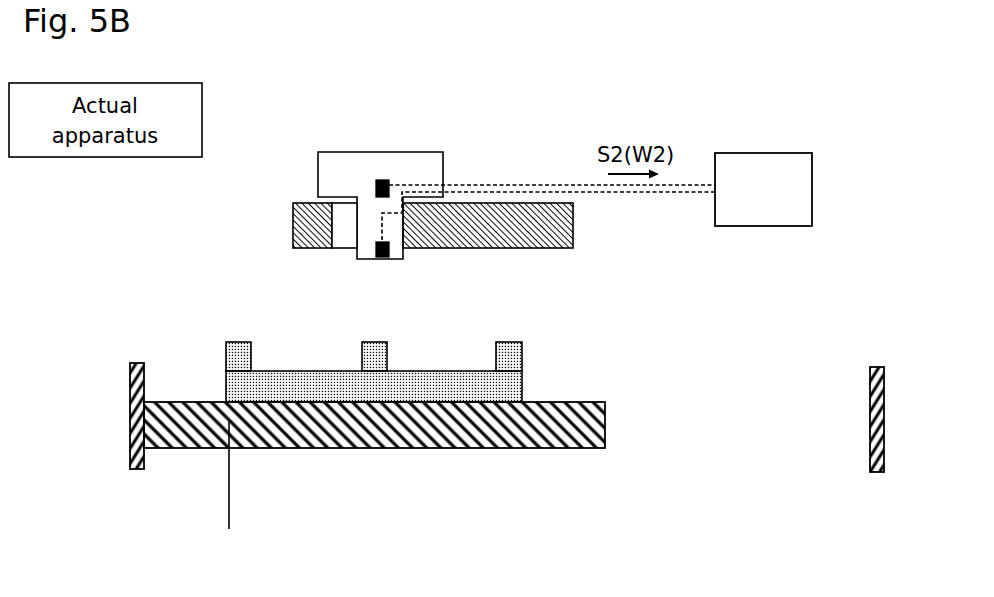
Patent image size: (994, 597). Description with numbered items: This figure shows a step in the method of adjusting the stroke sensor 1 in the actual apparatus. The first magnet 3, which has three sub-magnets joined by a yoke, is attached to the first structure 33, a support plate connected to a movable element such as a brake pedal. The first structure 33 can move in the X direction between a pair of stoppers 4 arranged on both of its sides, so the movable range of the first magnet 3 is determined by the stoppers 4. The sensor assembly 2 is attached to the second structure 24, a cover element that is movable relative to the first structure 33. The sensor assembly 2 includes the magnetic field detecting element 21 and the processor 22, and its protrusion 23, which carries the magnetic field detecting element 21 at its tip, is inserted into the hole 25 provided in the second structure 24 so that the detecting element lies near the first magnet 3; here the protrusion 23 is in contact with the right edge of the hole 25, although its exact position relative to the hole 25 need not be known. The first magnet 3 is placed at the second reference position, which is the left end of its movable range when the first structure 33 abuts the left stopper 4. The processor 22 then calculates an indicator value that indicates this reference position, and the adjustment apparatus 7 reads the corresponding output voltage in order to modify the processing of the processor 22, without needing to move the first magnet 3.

The stroke sensor 1 is at (215, 272).
The sensor assembly 2 is at (300, 180).
The first magnet 3 is at (212, 351).
The stopper 4 is at (137, 363).
The adjustment apparatus 7 is at (770, 153).
The magnetic field detecting element 21 is at (378, 259).
The processor 22 is at (381, 180).
The protrusion 23 is at (368, 224).
The second structure 24 is at (538, 203).
The hole 25 is at (397, 233).
The first structure 33 is at (589, 402).